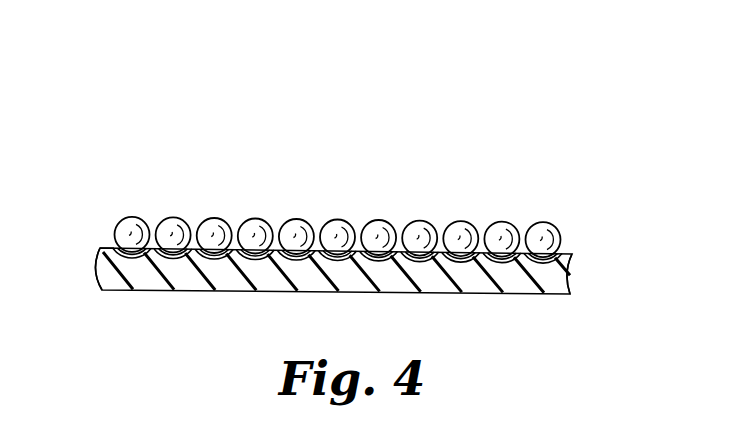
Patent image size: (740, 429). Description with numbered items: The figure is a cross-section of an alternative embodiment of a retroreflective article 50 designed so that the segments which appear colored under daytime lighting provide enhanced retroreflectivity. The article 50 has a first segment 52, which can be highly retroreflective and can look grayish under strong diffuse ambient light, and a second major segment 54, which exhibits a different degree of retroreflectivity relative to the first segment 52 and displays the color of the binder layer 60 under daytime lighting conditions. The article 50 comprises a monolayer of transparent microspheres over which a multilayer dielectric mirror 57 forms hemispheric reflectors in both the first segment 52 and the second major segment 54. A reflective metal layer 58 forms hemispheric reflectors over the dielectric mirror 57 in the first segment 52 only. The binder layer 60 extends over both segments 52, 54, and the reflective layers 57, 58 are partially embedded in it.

The retroreflective article 50 is at (495, 56).
The first segment 52 is at (353, 150).
The second major segment 54 is at (577, 163).
The multilayer dielectric mirror 57 is at (115, 248).
The reflective metal layer 58 is at (178, 262).
The binder layer 60 is at (93, 275).